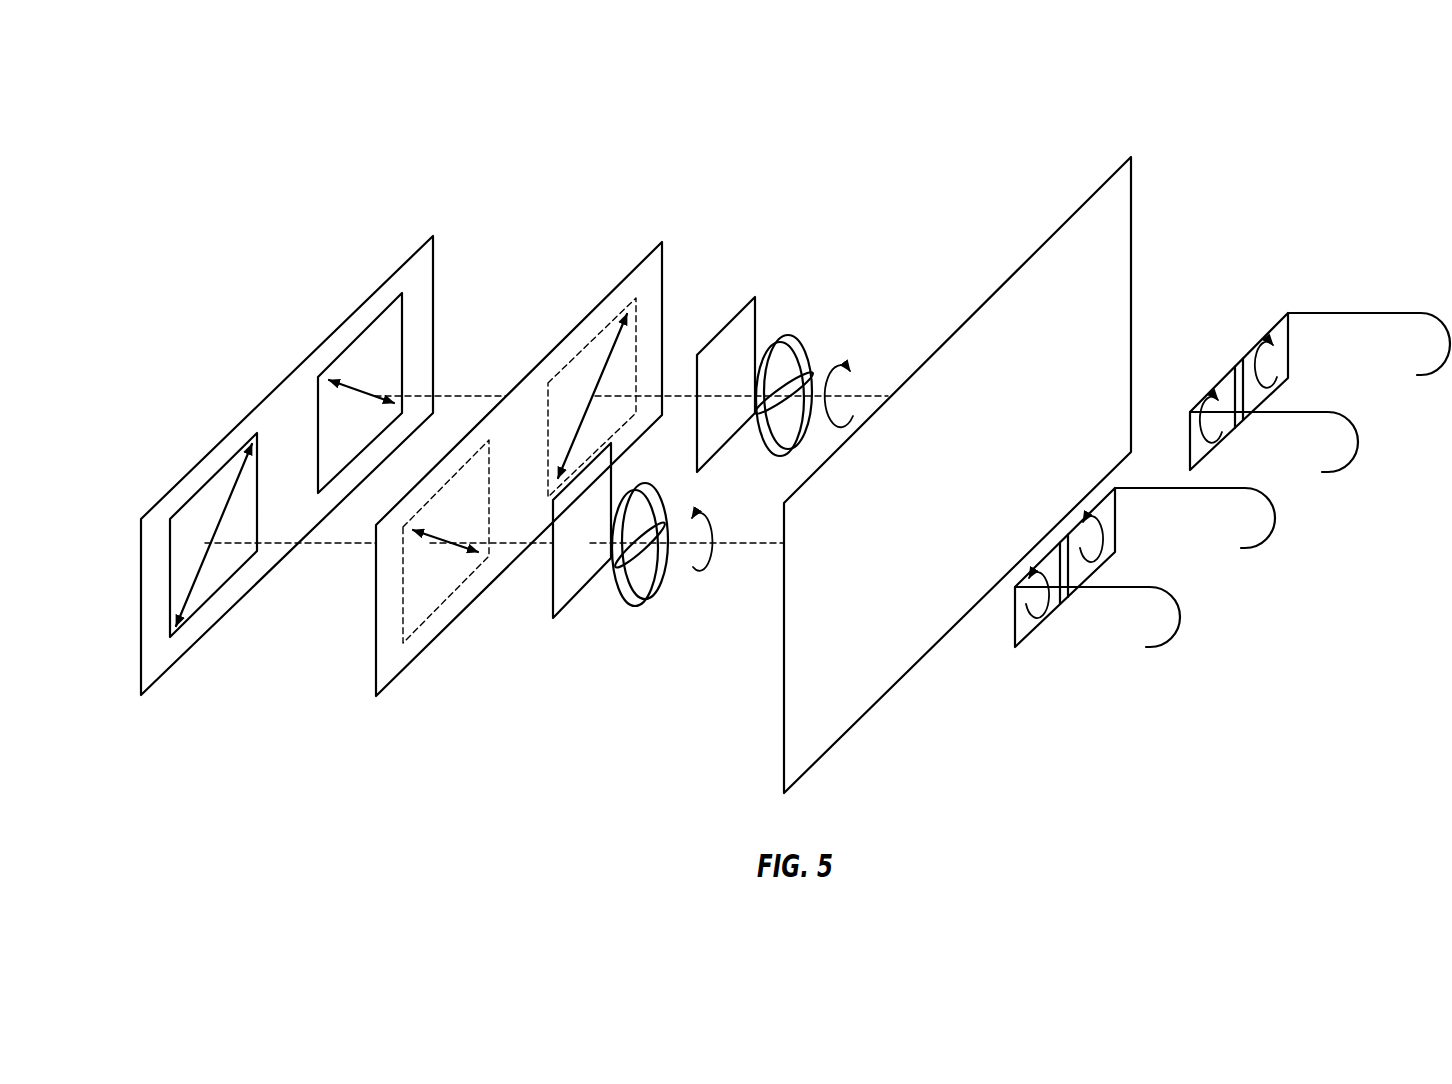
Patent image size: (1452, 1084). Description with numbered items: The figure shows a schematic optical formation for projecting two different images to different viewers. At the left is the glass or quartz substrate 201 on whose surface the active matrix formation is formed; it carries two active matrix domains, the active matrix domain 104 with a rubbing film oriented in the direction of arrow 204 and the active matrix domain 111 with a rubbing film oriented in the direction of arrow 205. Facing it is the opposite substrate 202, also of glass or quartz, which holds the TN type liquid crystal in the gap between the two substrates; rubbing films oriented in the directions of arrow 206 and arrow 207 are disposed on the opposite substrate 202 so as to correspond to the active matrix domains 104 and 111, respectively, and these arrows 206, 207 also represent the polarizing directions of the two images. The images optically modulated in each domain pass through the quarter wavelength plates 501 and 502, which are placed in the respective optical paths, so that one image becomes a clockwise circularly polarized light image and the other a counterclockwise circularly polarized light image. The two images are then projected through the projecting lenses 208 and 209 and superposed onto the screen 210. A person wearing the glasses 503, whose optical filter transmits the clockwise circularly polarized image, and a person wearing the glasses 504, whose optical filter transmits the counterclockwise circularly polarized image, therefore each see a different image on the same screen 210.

The active matrix domain 104 is at (197, 613).
The active matrix domain 111 is at (399, 327).
The glass or quartz substrate 201 is at (412, 267).
The opposite substrate 202 is at (638, 278).
The arrow indicating rubbing film orientation 204 is at (206, 555).
The arrow indicating rubbing film orientation 205 is at (350, 383).
The arrow indicating rubbing film orientation and polarizing direction 206 is at (433, 540).
The arrow indicating rubbing film orientation and polarizing direction 207 is at (598, 388).
The projecting lens 208 is at (625, 603).
The projecting lens 209 is at (805, 347).
The screen 210 is at (1110, 193).
The quarter wavelength plate 501 is at (557, 593).
The quarter wavelength plate 502 is at (751, 312).
The glasses 503 is at (1200, 488).
The glasses 504 is at (1328, 313).